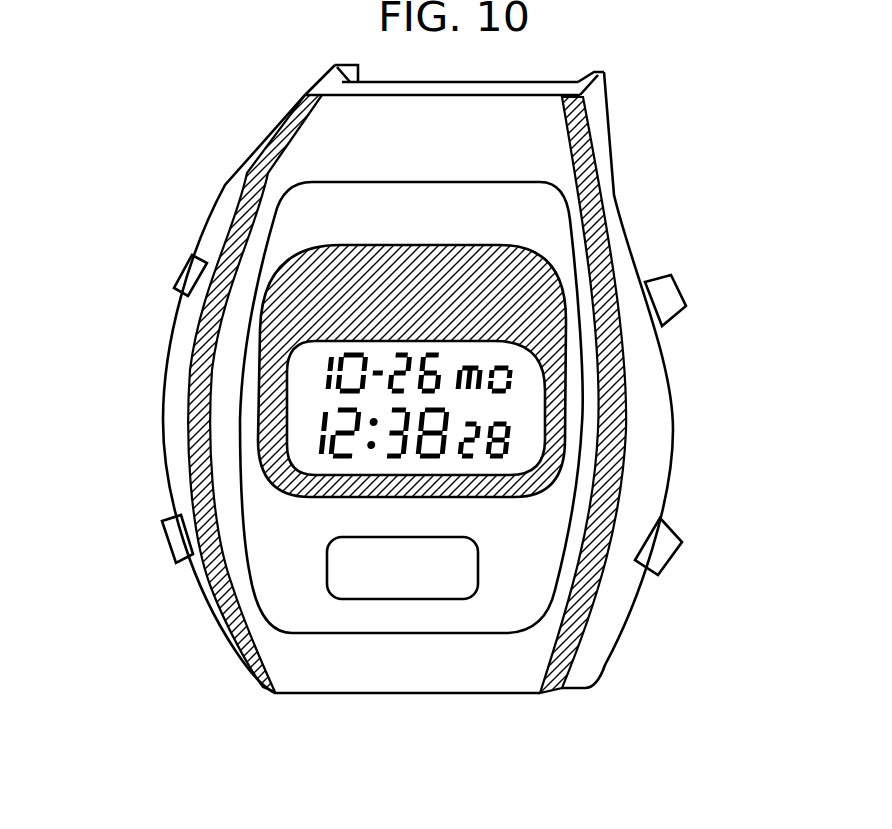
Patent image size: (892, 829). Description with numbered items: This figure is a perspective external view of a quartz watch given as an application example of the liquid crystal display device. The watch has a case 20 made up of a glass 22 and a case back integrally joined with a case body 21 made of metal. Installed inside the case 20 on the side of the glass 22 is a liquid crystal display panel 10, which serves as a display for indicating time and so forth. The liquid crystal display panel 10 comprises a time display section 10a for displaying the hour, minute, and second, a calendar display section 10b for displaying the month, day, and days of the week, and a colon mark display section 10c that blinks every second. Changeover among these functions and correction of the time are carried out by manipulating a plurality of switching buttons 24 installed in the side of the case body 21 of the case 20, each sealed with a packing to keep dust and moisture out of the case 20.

The case 20 is at (228, 166).
The case body 21 is at (660, 417).
The glass 22 is at (540, 213).
The switching buttons 24 is at (190, 268).
The liquid crystal display panel 10 is at (298, 387).
The time display section 10a is at (421, 464).
The calendar display section 10b is at (453, 344).
The colon mark display section 10c is at (365, 458).